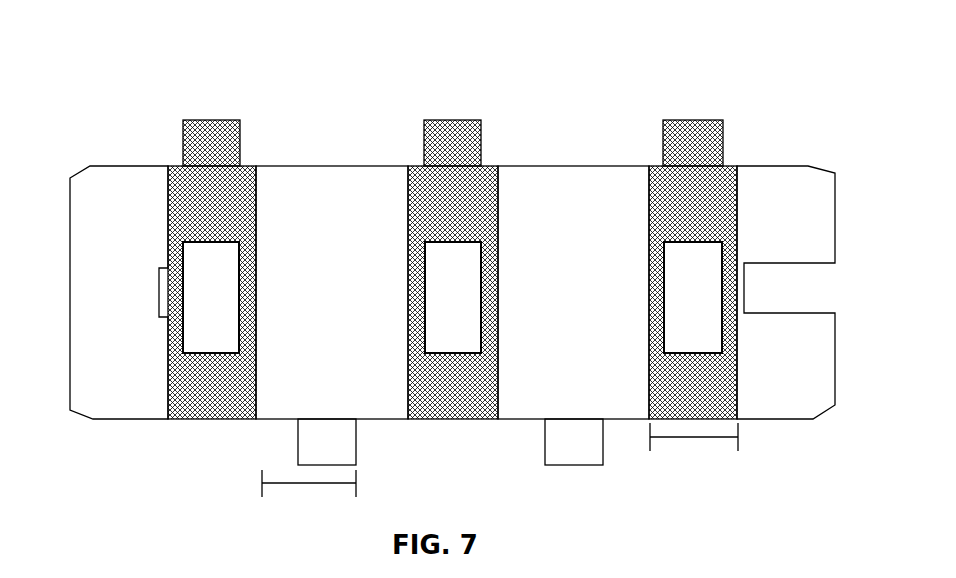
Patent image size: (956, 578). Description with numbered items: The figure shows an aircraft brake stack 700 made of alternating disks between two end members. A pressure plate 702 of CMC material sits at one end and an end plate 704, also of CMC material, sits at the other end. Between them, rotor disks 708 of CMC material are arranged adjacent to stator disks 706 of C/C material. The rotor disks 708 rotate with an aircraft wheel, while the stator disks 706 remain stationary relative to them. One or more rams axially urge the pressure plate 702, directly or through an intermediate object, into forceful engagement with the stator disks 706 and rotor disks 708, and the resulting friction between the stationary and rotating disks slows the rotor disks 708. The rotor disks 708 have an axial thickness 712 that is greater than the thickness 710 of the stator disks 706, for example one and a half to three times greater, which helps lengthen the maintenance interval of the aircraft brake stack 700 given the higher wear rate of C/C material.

The aircraft brake stack 700 is at (118, 75).
The pressure plate 702 is at (82, 170).
The end plate 704 is at (825, 161).
The stator disks 706 is at (215, 118).
The rotor disks 708 is at (358, 447).
The thickness of stator disks 710 is at (715, 445).
The thickness of rotor disks 712 is at (297, 487).